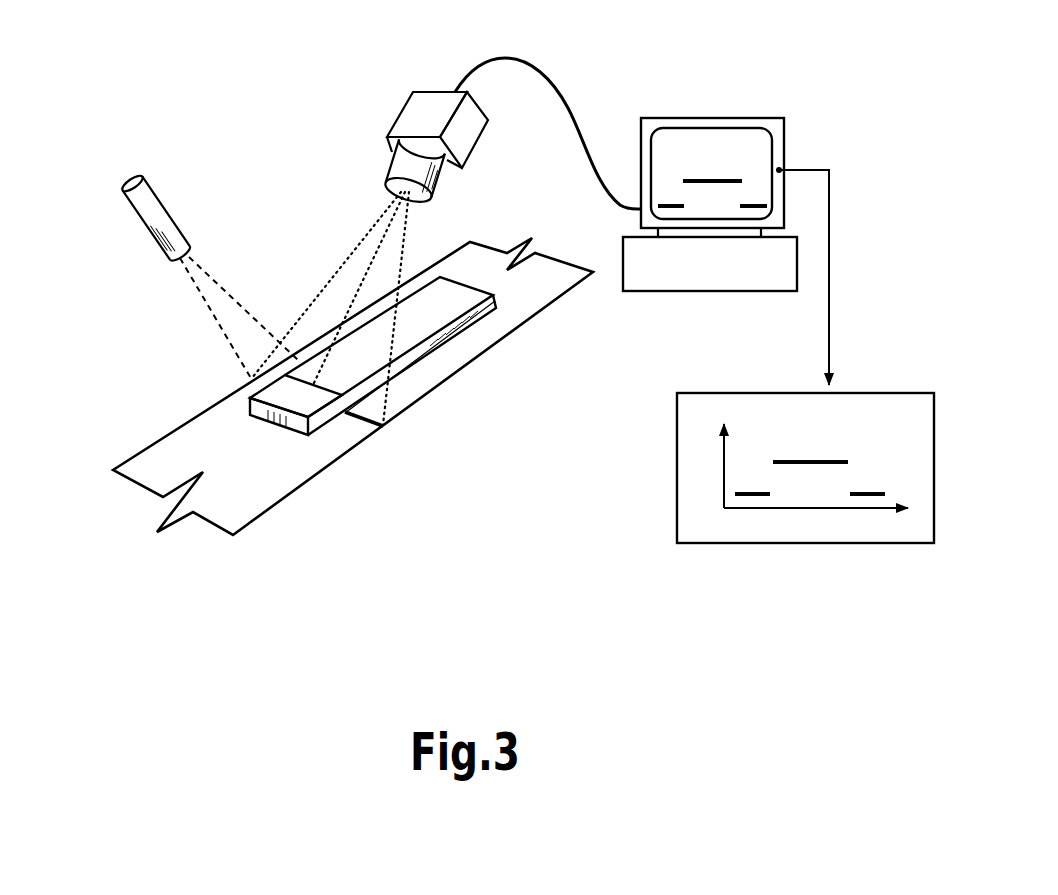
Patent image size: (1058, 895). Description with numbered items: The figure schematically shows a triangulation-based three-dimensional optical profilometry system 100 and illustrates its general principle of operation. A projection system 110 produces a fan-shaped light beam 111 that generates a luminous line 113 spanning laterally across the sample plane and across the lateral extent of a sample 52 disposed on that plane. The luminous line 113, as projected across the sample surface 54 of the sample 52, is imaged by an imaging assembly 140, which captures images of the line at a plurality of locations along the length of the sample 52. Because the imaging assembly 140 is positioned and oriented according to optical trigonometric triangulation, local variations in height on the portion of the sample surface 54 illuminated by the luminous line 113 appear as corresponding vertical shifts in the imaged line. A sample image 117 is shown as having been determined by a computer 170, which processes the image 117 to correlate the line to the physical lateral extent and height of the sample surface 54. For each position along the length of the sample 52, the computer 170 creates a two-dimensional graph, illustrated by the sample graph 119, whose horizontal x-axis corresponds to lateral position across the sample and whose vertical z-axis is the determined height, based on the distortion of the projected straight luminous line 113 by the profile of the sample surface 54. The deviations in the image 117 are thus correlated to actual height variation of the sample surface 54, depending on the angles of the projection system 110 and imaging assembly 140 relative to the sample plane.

The triangulation-based three-dimensional optical profilometry system 100 is at (212, 105).
The projection system 110 is at (153, 257).
The fan-shaped light beam 111 is at (227, 275).
The luminous line 113 is at (354, 430).
The sample image 117 is at (692, 162).
The sample graph 119 is at (672, 462).
The imaging assembly 140 is at (386, 106).
The computer 170 is at (771, 105).
The sample 52 is at (271, 420).
The sample surface 54 is at (465, 286).